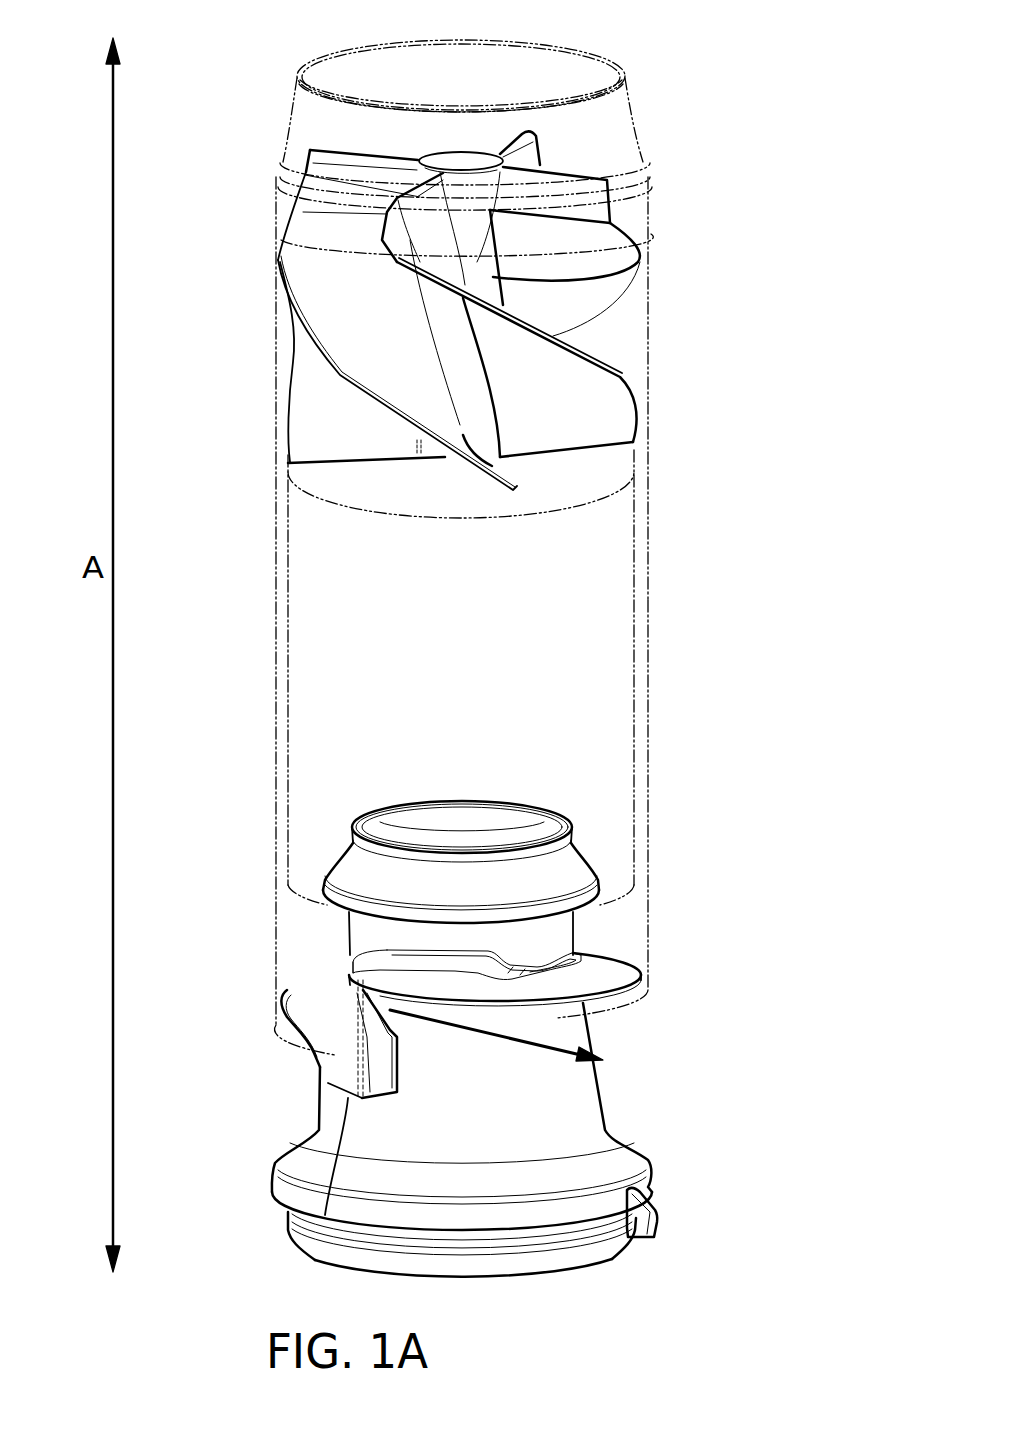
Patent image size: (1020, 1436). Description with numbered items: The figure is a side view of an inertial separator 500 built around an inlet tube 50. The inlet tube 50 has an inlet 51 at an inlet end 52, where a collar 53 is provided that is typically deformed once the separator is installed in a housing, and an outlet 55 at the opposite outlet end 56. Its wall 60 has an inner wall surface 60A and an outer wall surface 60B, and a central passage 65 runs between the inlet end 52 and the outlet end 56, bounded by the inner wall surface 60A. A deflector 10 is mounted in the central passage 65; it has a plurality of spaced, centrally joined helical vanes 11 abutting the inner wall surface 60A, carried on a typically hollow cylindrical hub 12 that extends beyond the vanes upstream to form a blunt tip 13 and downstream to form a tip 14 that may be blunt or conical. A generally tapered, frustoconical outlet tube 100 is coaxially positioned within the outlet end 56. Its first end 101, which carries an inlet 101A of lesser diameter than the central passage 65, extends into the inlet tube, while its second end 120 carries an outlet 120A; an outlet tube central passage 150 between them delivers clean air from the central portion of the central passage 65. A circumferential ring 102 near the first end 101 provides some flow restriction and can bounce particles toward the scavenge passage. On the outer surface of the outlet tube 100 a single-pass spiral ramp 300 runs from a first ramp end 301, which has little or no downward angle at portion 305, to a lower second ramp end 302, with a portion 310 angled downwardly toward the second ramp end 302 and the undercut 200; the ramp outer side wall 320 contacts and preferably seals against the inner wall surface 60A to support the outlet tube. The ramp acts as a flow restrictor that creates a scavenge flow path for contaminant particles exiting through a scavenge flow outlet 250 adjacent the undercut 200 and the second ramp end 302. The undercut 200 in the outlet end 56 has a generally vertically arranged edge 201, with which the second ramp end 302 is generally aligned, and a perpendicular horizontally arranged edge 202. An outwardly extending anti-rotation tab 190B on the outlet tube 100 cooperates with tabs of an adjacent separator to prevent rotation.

The deflector 10 is at (592, 352).
The helical vanes 11 is at (298, 352).
The cylindrical hub 12 is at (612, 232).
The upstream tip 13 is at (455, 157).
The downstream tip 14 is at (434, 465).
The inlet tube 50 is at (270, 647).
The inlet 51 is at (618, 68).
The inlet end 52 is at (453, 57).
The collar 53 is at (278, 172).
The outlet 55 is at (648, 993).
The outlet end 56 is at (617, 1012).
The wall 60 is at (274, 522).
The inner wall surface 60A is at (350, 67).
The outer wall surface 60B is at (270, 573).
The central passage 65 is at (563, 540).
The outlet tube 100 is at (600, 1117).
The first end 101 is at (525, 805).
The inlet 101A is at (481, 816).
The circumferential ring 102 is at (597, 882).
The second end 120 is at (451, 1280).
The outlet 120A is at (572, 1262).
The outlet tube central passage 150 is at (417, 818).
The second anti-rotation tab 190B is at (655, 1223).
The undercut 200 is at (335, 1021).
The vertically arranged edge 201 is at (363, 1078).
The horizontally arranged edge 202 is at (325, 1215).
The scavenge flow outlet 250 is at (380, 984).
The spiral ramp 300 is at (320, 940).
The first ramp end 301 is at (350, 973).
The second ramp end 302 is at (377, 1055).
The portion with little or no downward angle 305 is at (433, 958).
The downwardly angled portion 310 is at (289, 1012).
The ramp outer side wall 320 is at (640, 968).
The inertial separator 500 is at (790, 71).